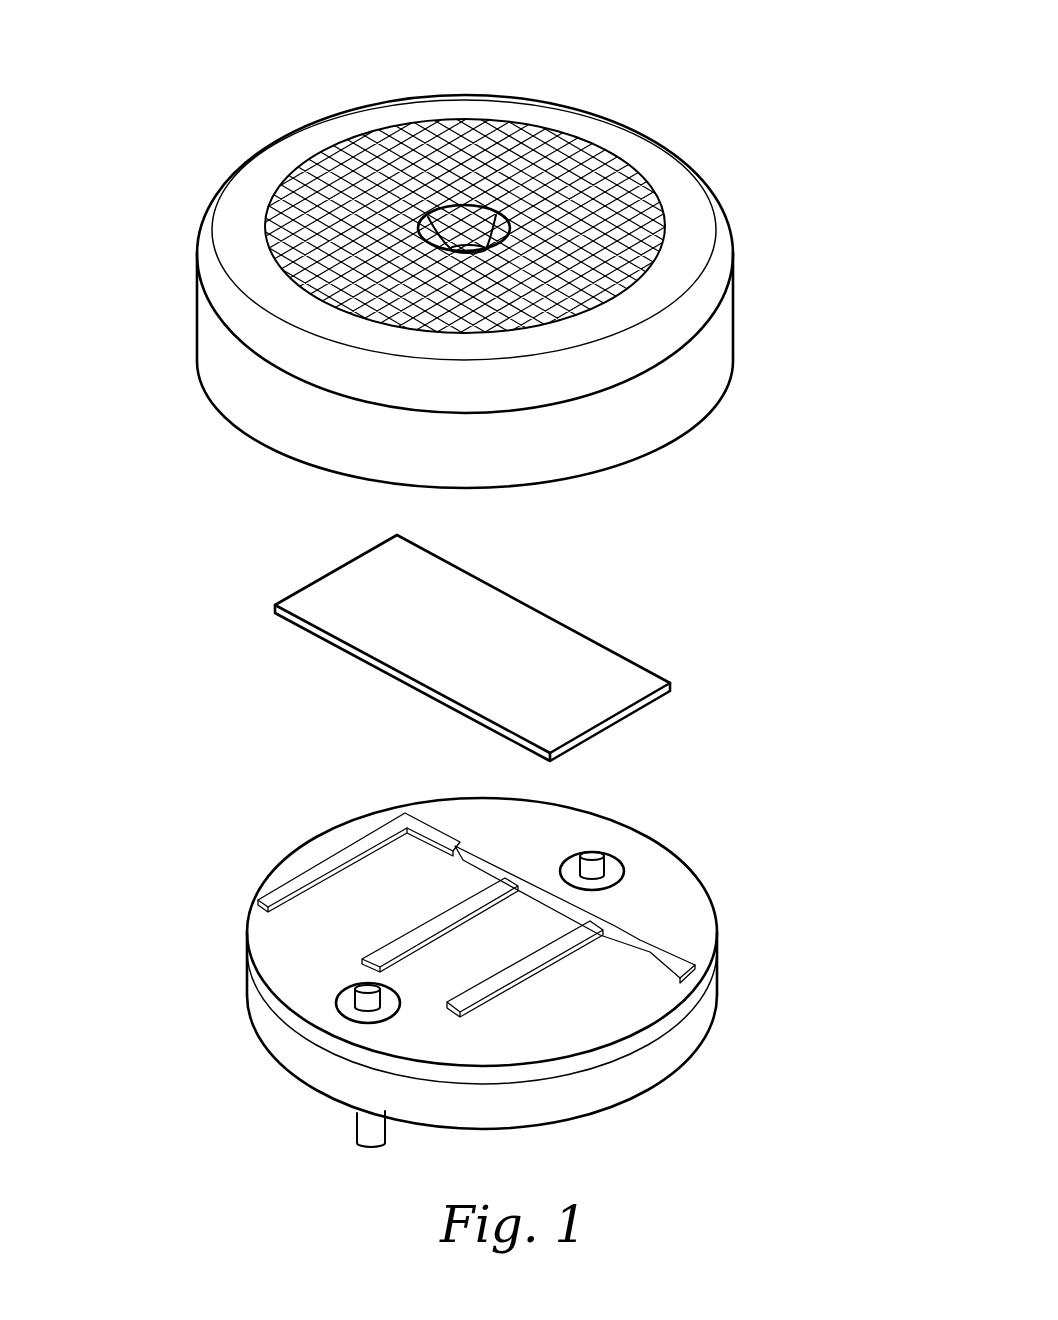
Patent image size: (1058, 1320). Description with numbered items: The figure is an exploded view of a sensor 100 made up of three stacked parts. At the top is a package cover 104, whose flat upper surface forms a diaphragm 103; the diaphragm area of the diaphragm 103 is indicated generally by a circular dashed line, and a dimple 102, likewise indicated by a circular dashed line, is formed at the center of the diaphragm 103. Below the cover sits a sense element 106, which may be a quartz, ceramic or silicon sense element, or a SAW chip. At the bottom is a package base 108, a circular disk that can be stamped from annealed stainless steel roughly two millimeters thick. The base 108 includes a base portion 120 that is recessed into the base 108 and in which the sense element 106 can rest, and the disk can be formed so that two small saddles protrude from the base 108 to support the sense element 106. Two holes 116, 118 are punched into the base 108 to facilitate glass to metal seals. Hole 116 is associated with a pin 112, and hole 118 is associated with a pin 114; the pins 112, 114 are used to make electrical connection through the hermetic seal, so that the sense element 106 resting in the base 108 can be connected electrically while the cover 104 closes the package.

The sensor 100 is at (696, 98).
The dimple 102 is at (510, 227).
The diaphragm 103 is at (348, 182).
The package cover 104 is at (197, 318).
The sense element 106 is at (330, 593).
The package base 108 is at (675, 928).
The pin 112 is at (358, 984).
The pin 114 is at (603, 850).
The hole 116 is at (337, 1003).
The hole 118 is at (615, 870).
The base portion 120 is at (358, 907).